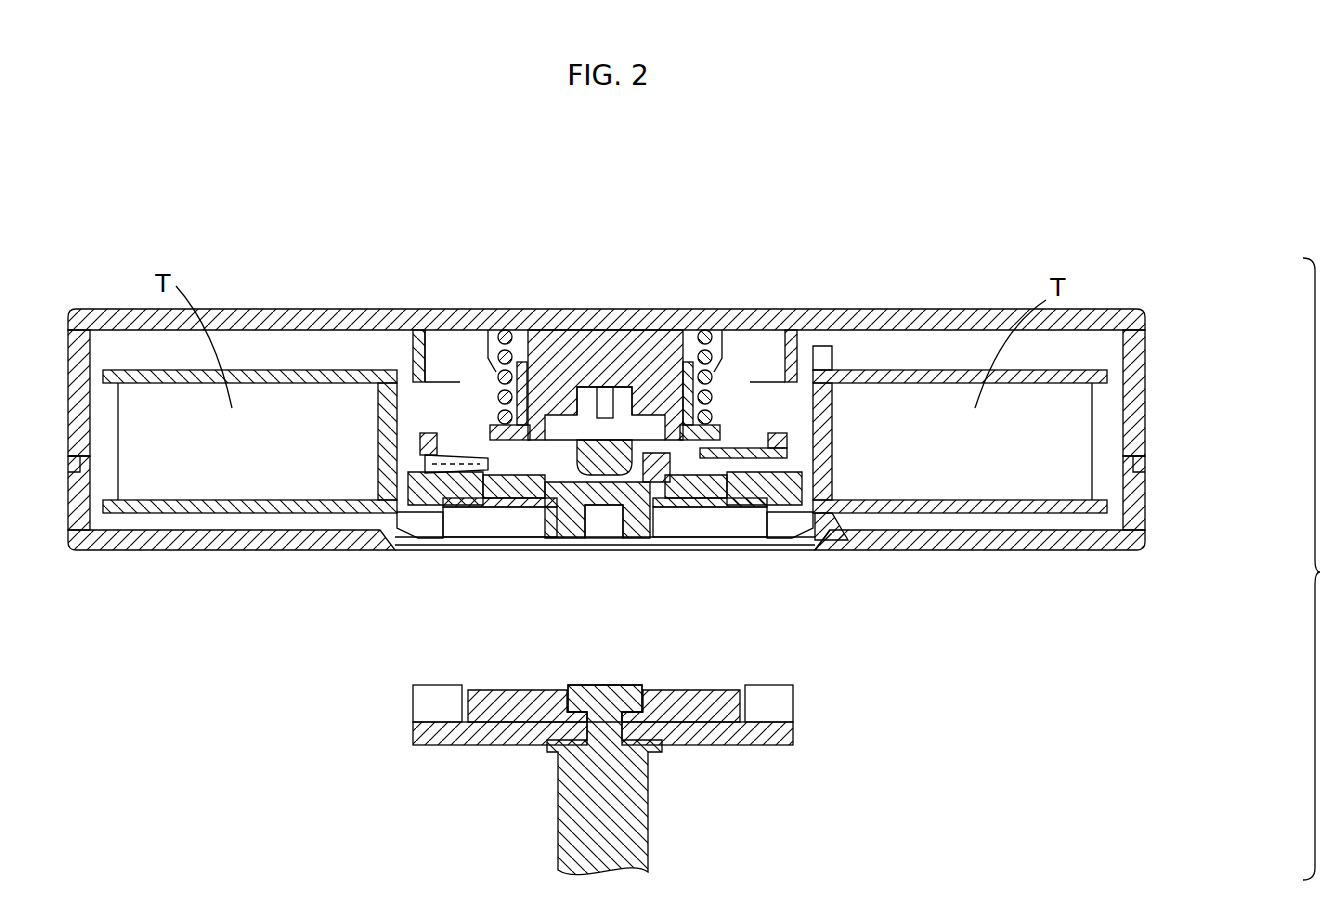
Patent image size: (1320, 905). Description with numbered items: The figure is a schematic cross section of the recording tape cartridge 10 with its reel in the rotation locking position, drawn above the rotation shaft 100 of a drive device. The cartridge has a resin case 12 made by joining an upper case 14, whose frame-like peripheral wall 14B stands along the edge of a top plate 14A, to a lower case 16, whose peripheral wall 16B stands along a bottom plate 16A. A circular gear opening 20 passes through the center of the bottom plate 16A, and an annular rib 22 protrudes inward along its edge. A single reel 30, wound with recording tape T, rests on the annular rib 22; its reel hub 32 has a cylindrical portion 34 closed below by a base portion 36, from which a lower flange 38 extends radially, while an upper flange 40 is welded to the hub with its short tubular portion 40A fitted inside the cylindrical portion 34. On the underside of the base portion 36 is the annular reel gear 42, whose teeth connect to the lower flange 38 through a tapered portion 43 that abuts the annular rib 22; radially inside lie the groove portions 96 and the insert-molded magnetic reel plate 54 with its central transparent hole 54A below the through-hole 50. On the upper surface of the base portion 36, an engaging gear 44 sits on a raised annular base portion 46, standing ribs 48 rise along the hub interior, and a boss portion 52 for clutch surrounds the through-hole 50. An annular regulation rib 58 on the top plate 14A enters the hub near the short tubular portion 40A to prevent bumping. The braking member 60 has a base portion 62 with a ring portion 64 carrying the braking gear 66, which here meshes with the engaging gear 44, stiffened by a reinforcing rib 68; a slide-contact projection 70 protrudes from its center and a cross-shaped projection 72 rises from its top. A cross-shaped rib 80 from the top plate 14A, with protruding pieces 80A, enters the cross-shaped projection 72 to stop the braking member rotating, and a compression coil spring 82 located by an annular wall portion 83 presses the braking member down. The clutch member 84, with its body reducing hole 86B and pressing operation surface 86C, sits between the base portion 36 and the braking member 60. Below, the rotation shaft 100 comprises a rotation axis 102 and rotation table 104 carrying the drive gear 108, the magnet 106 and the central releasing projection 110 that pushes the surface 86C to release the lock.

The recording tape cartridge 10 is at (848, 195).
The case 12 is at (1234, 393).
The upper case 14 is at (1152, 404).
The top plate 14A is at (976, 310).
The peripheral wall 14B is at (1140, 345).
The lower case 16 is at (1152, 515).
The bottom plate 16A is at (1020, 548).
The peripheral wall 16B is at (1140, 542).
The gear opening 20 is at (810, 540).
The annular rib 22 is at (850, 537).
The reel 30 is at (866, 362).
The reel hub 32 is at (898, 403).
The cylindrical portion 34 is at (823, 445).
The base portion 36 is at (776, 492).
The lower flange 38 is at (992, 510).
The upper flange 40 is at (992, 385).
The short tubular portion 40A is at (835, 346).
The reel gear 42 is at (413, 535).
The tapered portion 43 is at (838, 547).
The engaging gear 44 is at (430, 464).
The annular base portion 46 is at (470, 522).
The standing ribs 48 is at (420, 437).
The through-hole 50 is at (660, 470).
The boss portion for clutch 52 is at (500, 480).
The reel plate 54 is at (710, 482).
The transparent hole 54A is at (535, 458).
The regulation rib 58 is at (790, 365).
The braking member 60 is at (472, 440).
The base portion 62 is at (522, 400).
The ring portion 64 is at (443, 470).
The braking gear 66 is at (445, 462).
The reinforcing rib 68 is at (772, 435).
The slide-contact projection 70 is at (608, 400).
The cross-shaped projection 72 is at (688, 400).
The cross-shaped rib 80 is at (600, 345).
The protruding piece 80A is at (625, 395).
The compression coil spring 82 is at (708, 368).
The annular wall portion 83 is at (497, 400).
The clutch member 84 is at (585, 495).
The body reducing hole 86B is at (603, 538).
The pressing operation surface 86C is at (603, 458).
The groove portions 96 is at (445, 502).
The rotation shaft 100 is at (845, 745).
The rotation axis 102 is at (640, 856).
The rotation table 104 is at (730, 742).
The magnet 106 is at (490, 710).
The drive gear 108 is at (413, 705).
The releasing projection 110 is at (603, 692).